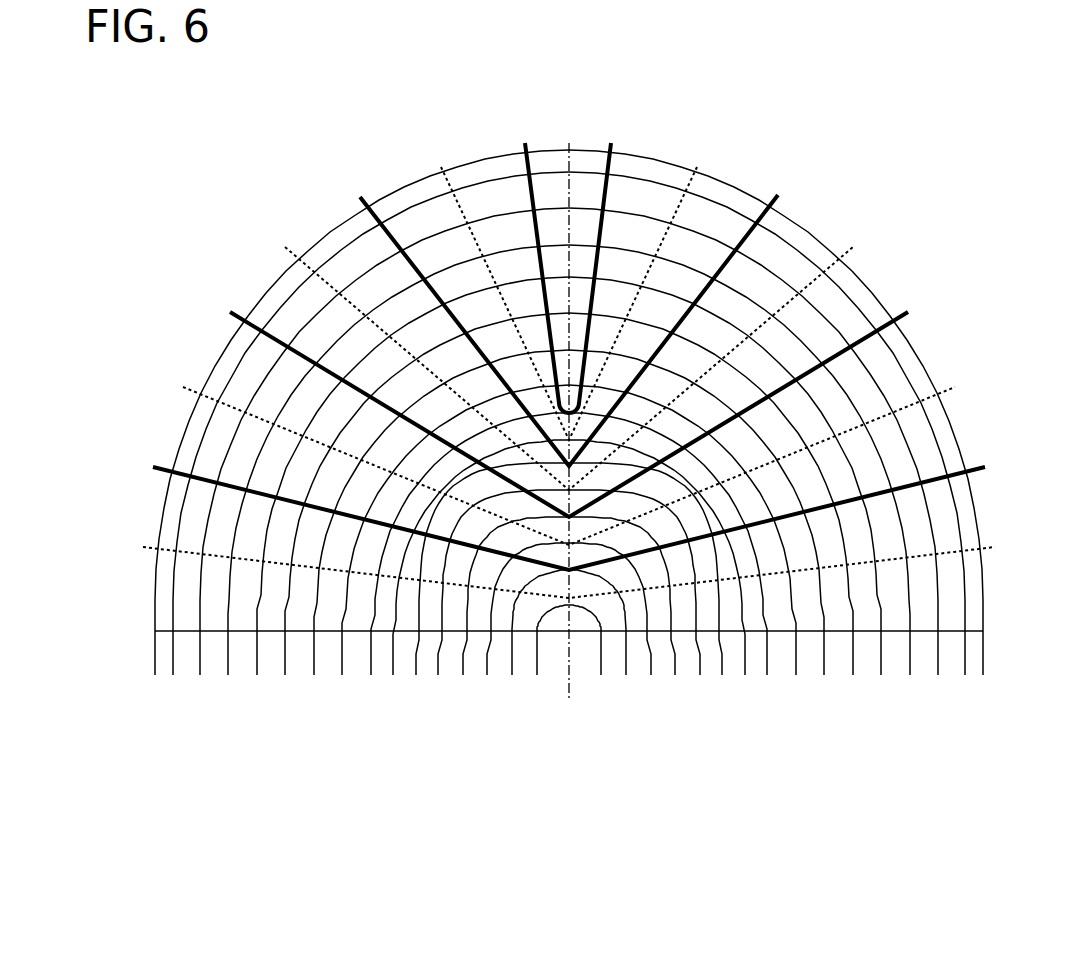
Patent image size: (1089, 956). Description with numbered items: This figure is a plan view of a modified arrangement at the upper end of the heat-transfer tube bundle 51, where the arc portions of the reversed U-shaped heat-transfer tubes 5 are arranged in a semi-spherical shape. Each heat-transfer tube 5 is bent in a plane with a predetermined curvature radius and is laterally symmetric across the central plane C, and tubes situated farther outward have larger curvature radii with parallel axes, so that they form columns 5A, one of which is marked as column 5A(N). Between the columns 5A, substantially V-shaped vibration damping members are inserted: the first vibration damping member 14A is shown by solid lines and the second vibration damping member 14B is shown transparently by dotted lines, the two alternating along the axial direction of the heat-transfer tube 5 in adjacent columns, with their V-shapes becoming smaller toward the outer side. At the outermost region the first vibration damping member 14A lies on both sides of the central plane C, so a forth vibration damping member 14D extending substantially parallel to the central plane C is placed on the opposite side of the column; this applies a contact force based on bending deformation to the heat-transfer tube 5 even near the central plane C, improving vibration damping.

The heat-transfer tube 5 is at (932, 545).
The column (heat-transfer tube layer) 5A is at (584, 379).
The heat-transfer tube bundle 51 is at (120, 632).
The first vibration damping member 14A is at (360, 197).
The second vibration damping member 14B is at (441, 167).
The forth vibration damping member 14D is at (569, 143).
The central plane C is at (570, 439).